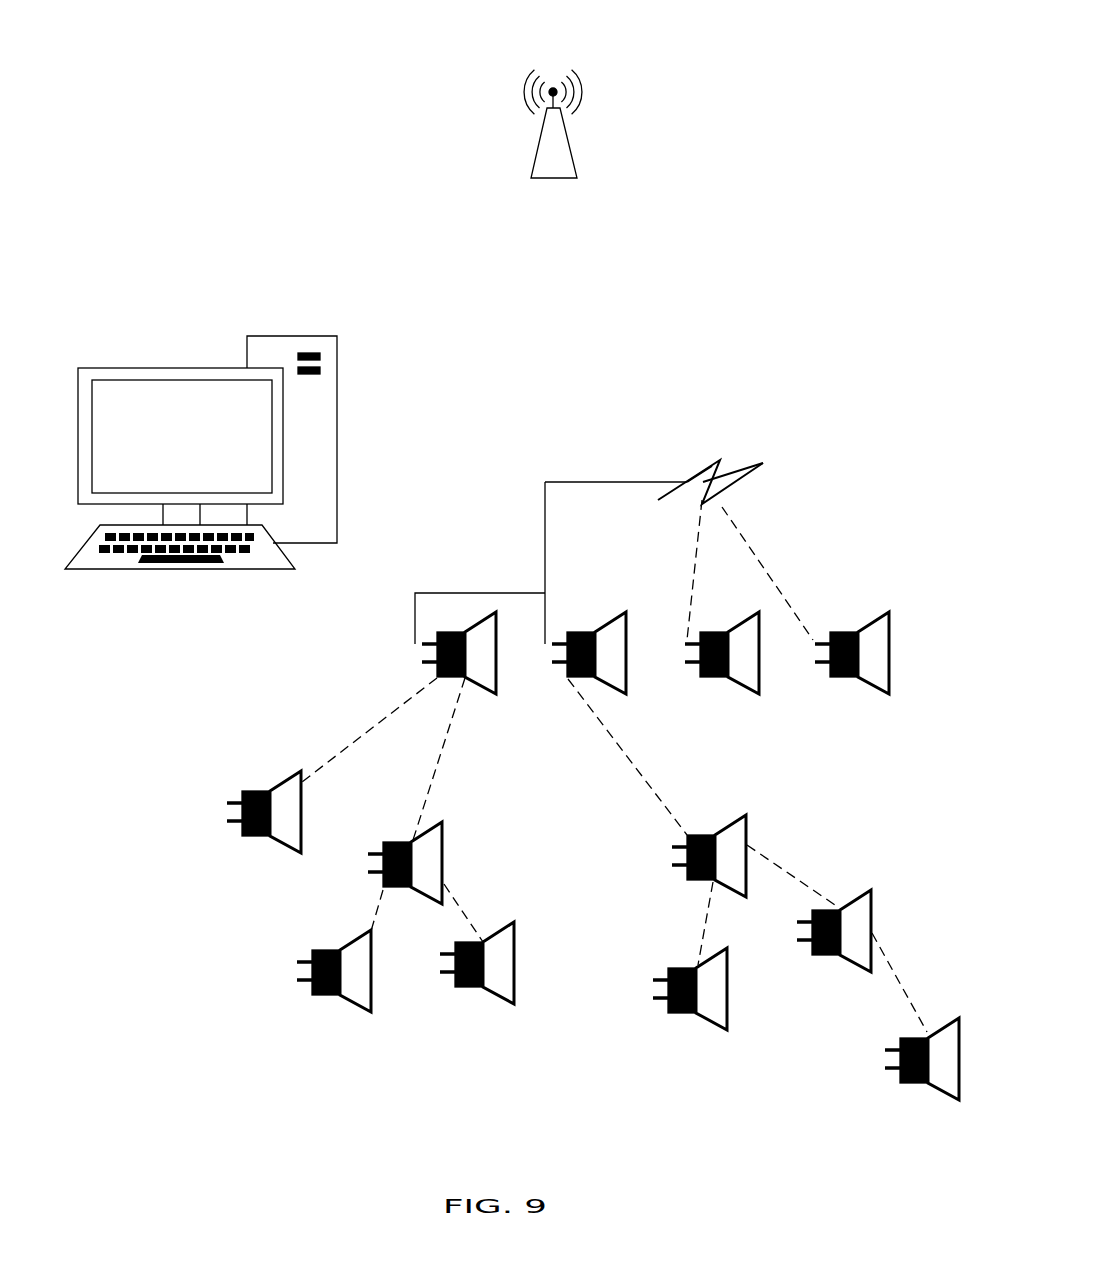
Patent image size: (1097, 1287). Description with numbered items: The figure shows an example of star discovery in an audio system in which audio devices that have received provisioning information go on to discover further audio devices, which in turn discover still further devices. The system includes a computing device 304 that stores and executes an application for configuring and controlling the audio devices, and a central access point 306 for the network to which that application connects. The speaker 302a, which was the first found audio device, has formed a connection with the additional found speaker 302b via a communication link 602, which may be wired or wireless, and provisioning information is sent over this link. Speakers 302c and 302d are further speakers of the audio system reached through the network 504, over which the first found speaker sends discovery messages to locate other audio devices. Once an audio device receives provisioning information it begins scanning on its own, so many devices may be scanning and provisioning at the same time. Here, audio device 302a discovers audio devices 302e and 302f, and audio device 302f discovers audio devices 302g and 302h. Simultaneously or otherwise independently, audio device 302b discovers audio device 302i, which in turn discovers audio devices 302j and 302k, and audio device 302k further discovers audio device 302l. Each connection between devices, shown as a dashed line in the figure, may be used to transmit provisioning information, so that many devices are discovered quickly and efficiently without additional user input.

The speaker 302a is at (468, 710).
The speaker 302b is at (615, 705).
The speaker 302c is at (745, 702).
The speaker 302d is at (877, 702).
The audio device 302e is at (250, 845).
The audio device 302f is at (462, 850).
The audio device 302g is at (348, 1022).
The audio device 302h is at (493, 1013).
The audio device 302i is at (760, 823).
The audio device 302j is at (702, 1033).
The audio device 302k is at (833, 962).
The audio device 302l is at (922, 1098).
The computing device 304 is at (118, 353).
The central access point 306 is at (558, 56).
The network 504 is at (705, 457).
The communication link 602 is at (458, 593).